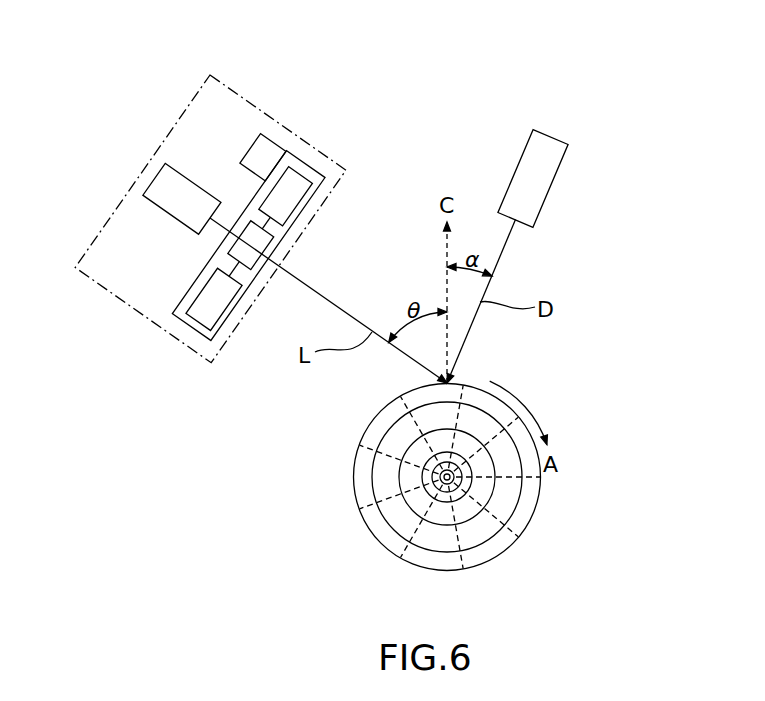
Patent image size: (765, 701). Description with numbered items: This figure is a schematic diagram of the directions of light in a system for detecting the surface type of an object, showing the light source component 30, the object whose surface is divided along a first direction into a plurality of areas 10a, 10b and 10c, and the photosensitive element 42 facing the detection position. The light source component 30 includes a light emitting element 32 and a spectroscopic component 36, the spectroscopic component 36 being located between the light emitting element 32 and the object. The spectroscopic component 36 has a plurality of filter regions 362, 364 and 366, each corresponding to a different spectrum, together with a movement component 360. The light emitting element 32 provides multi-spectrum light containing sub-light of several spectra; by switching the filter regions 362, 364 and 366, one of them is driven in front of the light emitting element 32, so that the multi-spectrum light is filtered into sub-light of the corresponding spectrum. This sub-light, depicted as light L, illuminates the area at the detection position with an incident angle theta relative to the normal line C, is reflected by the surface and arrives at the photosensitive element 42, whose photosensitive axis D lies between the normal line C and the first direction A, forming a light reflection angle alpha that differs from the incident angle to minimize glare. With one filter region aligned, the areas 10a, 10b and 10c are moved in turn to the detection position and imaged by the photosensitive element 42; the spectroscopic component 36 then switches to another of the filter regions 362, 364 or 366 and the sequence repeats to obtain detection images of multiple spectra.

The light source component 30 is at (198, 73).
The light emitting element 32 is at (147, 185).
The spectroscopic component 36 is at (323, 172).
The movement component 360 is at (276, 136).
The filter region 362 is at (232, 313).
The filter region 364 is at (281, 259).
The filter region 366 is at (302, 208).
The photosensitive element 42 is at (543, 180).
The area 10a is at (377, 407).
The area 10b is at (355, 505).
The area 10c is at (377, 547).